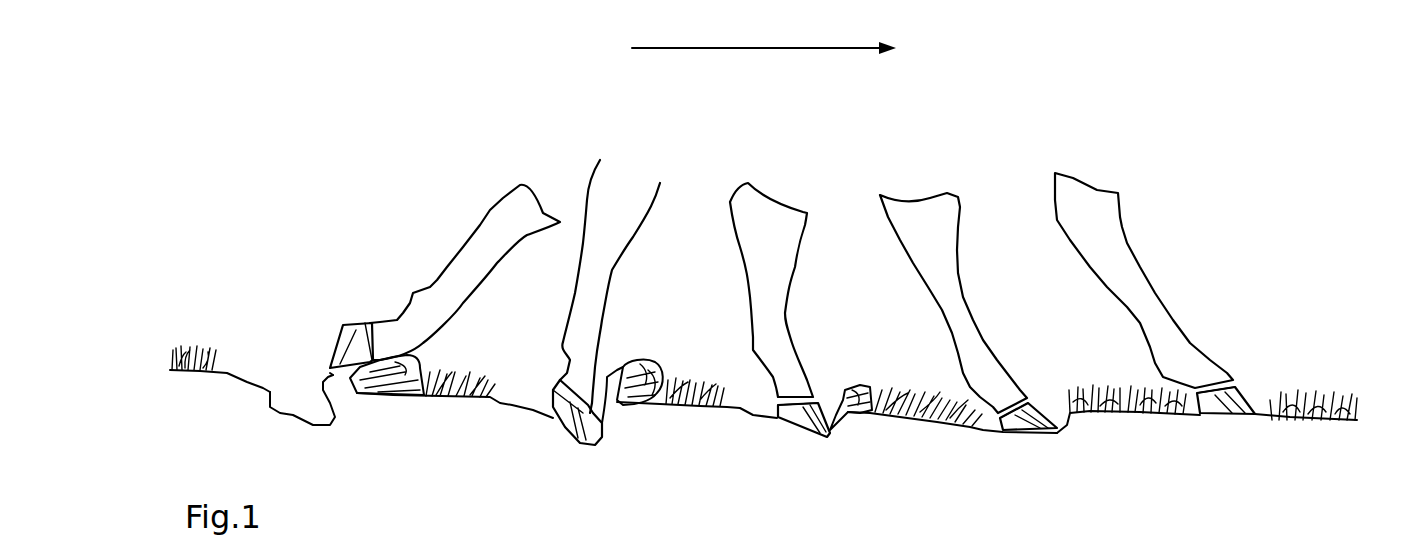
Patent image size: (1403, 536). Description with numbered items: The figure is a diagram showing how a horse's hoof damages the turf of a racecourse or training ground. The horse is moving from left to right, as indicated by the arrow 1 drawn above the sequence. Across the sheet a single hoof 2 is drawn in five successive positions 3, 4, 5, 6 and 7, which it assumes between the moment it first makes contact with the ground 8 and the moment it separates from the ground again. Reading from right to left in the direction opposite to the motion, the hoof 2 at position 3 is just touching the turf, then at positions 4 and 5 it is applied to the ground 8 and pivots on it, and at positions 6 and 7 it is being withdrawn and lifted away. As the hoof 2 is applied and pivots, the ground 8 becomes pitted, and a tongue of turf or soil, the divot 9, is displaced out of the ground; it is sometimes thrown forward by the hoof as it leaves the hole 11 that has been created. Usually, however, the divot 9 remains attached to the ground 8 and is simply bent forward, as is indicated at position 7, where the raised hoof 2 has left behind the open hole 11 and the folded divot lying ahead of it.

The arrow 1 is at (653, 48).
The hoof 2 is at (792, 258).
The first hoof position 3 is at (1112, 175).
The second hoof position 4 is at (920, 183).
The third hoof position 5 is at (784, 185).
The fourth hoof position 6 is at (638, 162).
The fifth hoof position 7 is at (524, 176).
The ground 8 is at (1312, 425).
The divot 9 is at (618, 367).
The hole 11 is at (307, 395).